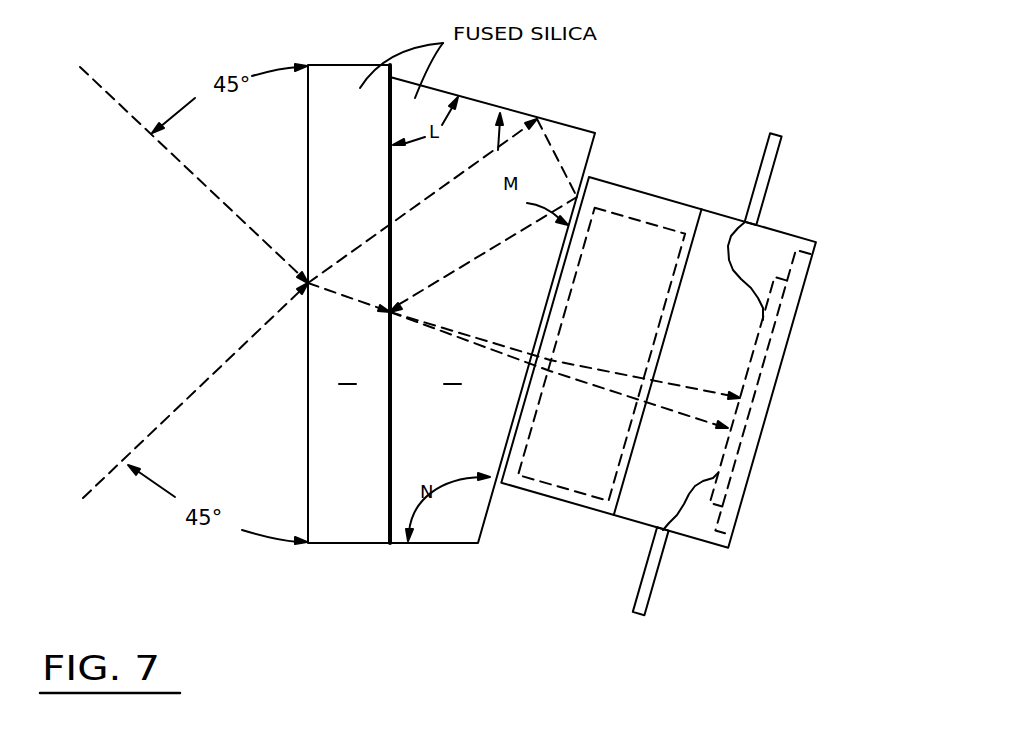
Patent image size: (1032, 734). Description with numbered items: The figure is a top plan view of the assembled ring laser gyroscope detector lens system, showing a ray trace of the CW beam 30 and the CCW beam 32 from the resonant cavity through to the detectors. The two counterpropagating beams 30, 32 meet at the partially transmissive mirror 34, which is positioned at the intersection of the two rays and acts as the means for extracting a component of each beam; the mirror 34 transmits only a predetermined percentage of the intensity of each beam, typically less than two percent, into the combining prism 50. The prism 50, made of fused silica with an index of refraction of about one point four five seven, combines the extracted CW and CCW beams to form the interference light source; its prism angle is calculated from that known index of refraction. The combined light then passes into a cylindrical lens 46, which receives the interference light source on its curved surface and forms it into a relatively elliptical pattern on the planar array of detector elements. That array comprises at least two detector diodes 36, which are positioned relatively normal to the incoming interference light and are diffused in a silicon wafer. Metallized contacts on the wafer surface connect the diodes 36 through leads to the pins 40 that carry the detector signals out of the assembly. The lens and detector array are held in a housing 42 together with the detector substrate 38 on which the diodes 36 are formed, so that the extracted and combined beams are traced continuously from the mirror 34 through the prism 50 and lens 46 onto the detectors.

The CW light beam 30 is at (247, 224).
The CCW light beam 32 is at (252, 338).
The mirror 34 is at (353, 600).
The detector diodes 36 is at (728, 437).
The detector substrate 38 is at (727, 550).
The pins 40 is at (773, 157).
The housing 42 is at (625, 177).
The cylindrical lens 46 is at (635, 441).
The prism 50 is at (461, 469).